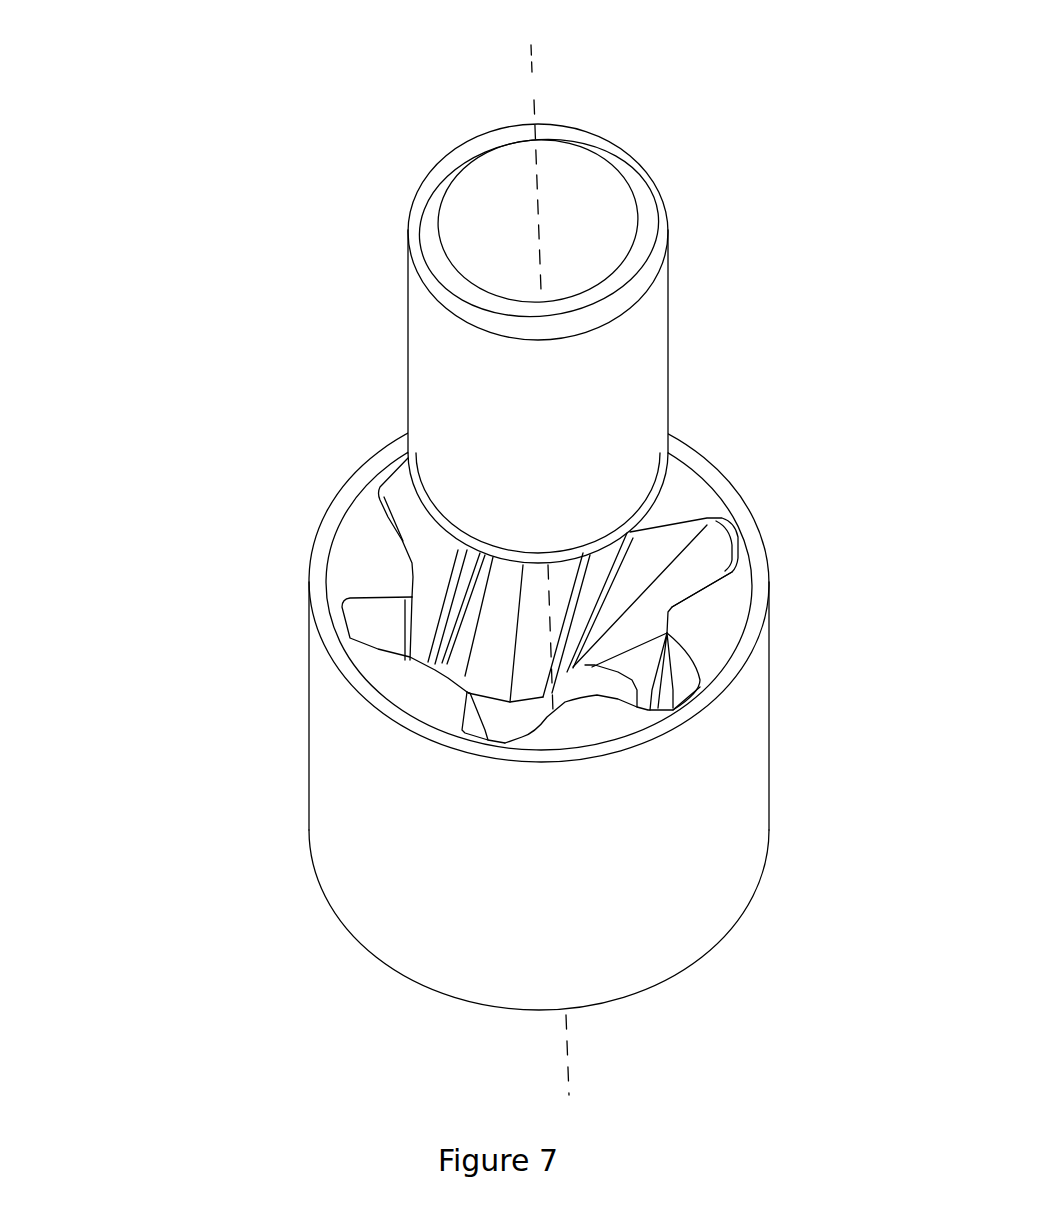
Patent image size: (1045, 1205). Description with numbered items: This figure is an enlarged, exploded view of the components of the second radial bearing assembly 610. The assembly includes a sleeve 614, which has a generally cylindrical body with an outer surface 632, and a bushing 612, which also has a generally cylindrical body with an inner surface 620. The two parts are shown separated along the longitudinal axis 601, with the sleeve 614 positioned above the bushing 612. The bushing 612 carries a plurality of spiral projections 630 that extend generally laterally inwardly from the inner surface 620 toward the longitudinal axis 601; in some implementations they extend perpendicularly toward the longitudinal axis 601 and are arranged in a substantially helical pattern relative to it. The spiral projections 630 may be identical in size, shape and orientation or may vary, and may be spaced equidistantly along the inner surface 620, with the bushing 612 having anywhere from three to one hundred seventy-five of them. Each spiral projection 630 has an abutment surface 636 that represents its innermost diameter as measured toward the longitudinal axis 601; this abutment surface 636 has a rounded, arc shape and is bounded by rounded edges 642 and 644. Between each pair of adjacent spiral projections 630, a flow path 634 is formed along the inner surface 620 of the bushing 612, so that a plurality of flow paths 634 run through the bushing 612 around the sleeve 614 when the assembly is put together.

The second radial bearing assembly 610 is at (76, 47).
The longitudinal axis 601 is at (568, 570).
The bushing 612 is at (318, 922).
The sleeve 614 is at (413, 168).
The inner surface 620 is at (375, 627).
The spiral projections 630 is at (420, 690).
The outer surface 632 is at (657, 333).
The flow paths 634 is at (716, 552).
The abutment surface 636 is at (492, 653).
The rounded edge 642 is at (673, 607).
The rounded edge 644 is at (667, 633).